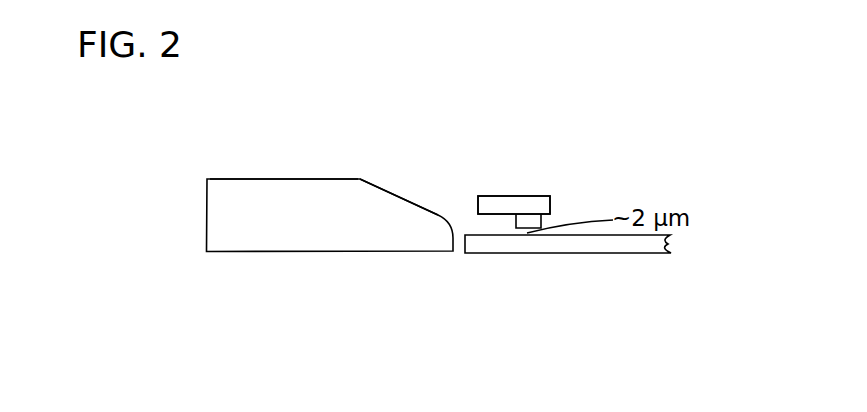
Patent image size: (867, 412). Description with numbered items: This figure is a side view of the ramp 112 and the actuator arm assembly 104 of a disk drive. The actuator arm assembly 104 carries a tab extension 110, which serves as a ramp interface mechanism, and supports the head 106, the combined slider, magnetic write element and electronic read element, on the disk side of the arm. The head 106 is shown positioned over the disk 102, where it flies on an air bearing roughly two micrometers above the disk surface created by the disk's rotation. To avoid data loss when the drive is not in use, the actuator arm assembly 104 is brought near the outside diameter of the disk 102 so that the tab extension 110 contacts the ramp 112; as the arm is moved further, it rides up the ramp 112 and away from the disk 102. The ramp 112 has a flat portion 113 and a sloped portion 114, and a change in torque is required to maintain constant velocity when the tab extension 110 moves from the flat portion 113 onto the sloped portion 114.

The disk 102 is at (658, 243).
The actuator arm assembly 104 is at (537, 196).
The head 106 is at (533, 223).
The tab extension 110 is at (497, 198).
The ramp 112 is at (285, 220).
The flat portion 113 is at (283, 179).
The sloped portion 114 is at (385, 188).